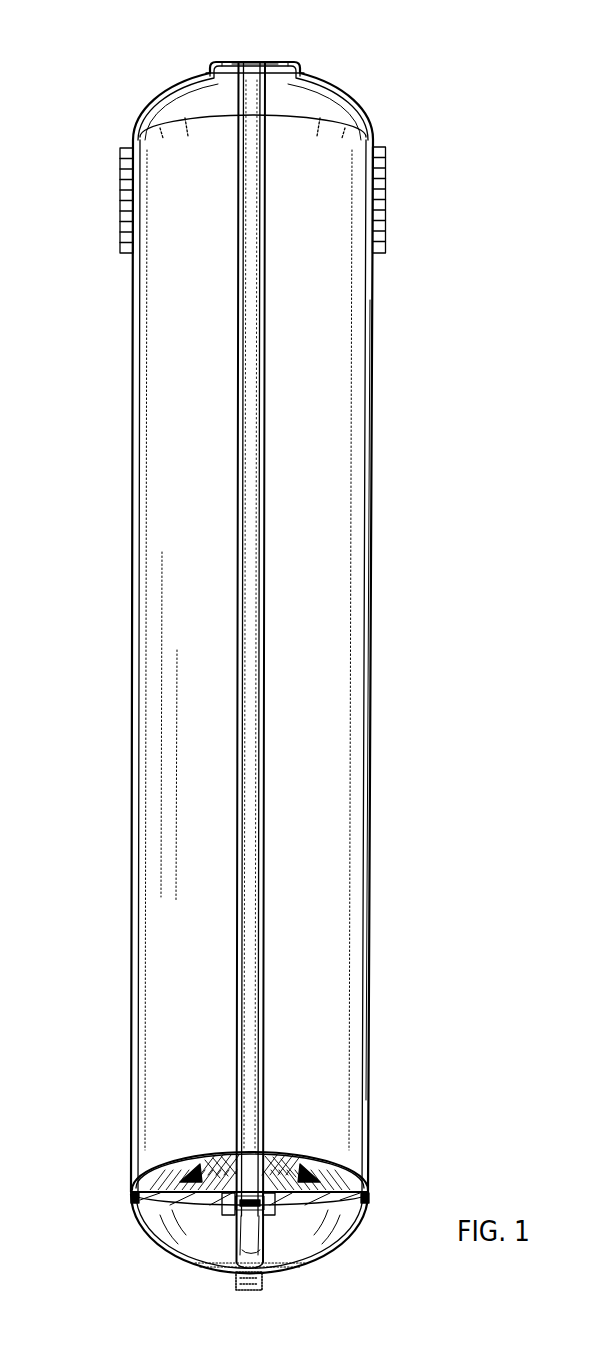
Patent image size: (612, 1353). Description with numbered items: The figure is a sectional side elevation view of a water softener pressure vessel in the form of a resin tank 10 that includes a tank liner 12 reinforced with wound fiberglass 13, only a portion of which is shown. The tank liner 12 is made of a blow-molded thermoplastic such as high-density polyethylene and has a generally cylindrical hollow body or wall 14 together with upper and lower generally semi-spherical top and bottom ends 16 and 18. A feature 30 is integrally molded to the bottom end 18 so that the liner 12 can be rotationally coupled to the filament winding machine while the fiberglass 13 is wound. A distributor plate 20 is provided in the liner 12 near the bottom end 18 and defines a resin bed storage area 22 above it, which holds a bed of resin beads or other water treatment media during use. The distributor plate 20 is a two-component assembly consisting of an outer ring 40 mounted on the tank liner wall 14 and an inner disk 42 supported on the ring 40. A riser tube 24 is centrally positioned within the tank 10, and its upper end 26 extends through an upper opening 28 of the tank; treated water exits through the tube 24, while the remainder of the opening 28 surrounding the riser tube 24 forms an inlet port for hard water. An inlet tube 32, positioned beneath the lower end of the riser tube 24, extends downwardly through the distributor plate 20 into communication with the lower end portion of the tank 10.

The resin tank 10 is at (299, 665).
The tank liner 12 is at (378, 349).
The wound fiberglass 13 is at (121, 222).
The wall 14 is at (372, 565).
The top end 16 is at (333, 100).
The bottom end 18 is at (340, 1242).
The distributor plate 20 is at (250, 1148).
The resin bed storage area 22 is at (213, 977).
The riser tube 24 is at (238, 453).
The upper end 26 is at (258, 60).
The upper opening 28 is at (230, 66).
The feature 30 is at (262, 1282).
The inlet tube 32 is at (238, 1226).
The outer ring 40 is at (337, 1160).
The inner disk 42 is at (132, 1200).